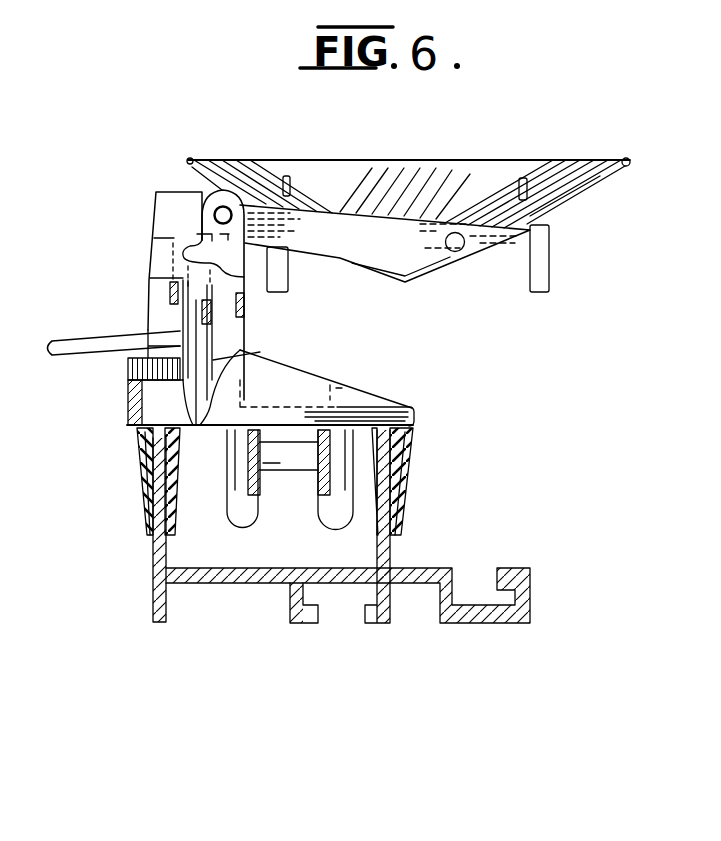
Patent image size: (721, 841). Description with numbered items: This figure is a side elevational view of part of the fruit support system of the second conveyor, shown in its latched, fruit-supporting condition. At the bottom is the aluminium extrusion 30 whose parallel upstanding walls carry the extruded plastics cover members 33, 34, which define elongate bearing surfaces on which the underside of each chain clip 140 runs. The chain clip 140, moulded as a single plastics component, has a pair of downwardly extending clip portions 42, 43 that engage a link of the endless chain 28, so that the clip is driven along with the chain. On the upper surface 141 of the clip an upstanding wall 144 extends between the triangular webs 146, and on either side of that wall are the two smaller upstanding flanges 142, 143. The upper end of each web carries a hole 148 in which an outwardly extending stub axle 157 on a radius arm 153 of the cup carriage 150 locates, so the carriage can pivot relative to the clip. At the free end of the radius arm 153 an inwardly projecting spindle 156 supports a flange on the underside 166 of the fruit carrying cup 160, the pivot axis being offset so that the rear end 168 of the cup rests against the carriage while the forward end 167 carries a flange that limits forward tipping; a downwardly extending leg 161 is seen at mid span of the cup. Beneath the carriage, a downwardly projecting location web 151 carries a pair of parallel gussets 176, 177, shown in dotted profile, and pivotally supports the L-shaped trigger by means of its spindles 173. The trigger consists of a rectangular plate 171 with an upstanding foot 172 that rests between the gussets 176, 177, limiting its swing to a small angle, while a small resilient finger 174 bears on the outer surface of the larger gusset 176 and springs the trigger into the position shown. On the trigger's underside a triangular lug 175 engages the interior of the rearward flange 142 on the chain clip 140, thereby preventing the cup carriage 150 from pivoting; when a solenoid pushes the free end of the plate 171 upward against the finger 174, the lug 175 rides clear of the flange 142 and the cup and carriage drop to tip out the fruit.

The endless chain 28 is at (290, 467).
The aluminium extrusion 30 is at (243, 573).
The cover member 33 is at (142, 497).
The cover member 34 is at (408, 463).
The clip portion 42 is at (235, 492).
The clip portion 43 is at (350, 500).
The chain clip 140 is at (413, 400).
The upper surface 141 is at (415, 411).
The upstanding flange 142 is at (128, 413).
The upstanding flange 143 is at (334, 378).
The upstanding wall 144 is at (250, 283).
The triangular web 146 is at (202, 223).
The hole 148 is at (221, 205).
The cup carriage 150 is at (497, 262).
The location web 151 is at (172, 243).
The radius arm 153 is at (312, 212).
The spindle 156 is at (455, 232).
The stub axle 157 is at (233, 196).
The fruit carrying cup 160 is at (638, 163).
The leg 161 is at (541, 267).
The underside 166 is at (407, 272).
The forward end 167 is at (187, 158).
The rear end 168 is at (578, 228).
The rectangular plate 171 is at (53, 338).
The foot 172 is at (246, 345).
The spindle 173 is at (245, 390).
The resilient finger 174 is at (148, 327).
The triangular lug 175 is at (128, 375).
The gusset 176 is at (168, 280).
The gusset 177 is at (213, 332).